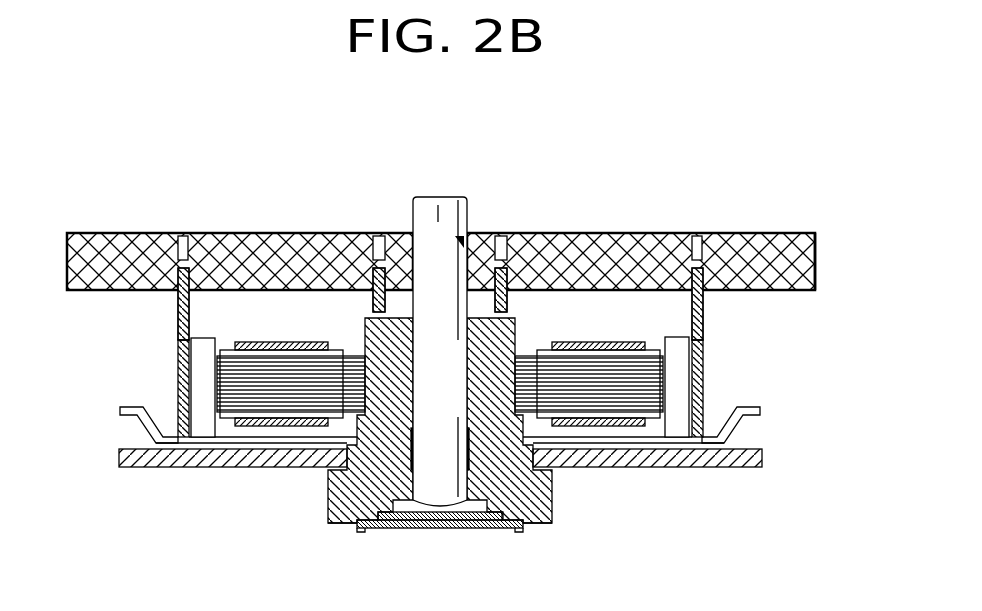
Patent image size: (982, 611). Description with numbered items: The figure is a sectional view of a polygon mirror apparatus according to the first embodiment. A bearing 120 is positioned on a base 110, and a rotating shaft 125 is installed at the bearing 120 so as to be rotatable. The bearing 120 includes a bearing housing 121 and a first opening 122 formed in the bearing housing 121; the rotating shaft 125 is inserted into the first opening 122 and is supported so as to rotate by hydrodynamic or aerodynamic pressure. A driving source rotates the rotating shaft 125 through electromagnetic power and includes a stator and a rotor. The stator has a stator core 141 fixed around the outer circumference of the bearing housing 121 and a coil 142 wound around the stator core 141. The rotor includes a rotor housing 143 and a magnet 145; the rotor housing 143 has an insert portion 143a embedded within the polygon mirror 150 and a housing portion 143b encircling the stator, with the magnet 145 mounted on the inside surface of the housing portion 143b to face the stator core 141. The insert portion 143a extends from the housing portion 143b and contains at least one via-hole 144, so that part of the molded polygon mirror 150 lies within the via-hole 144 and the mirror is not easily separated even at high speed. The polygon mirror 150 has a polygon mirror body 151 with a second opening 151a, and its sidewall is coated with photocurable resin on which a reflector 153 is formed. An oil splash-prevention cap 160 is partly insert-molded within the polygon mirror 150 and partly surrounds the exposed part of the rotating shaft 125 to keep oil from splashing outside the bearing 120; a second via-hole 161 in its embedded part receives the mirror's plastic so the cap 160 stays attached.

The base 110 is at (723, 463).
The bearing 120 is at (575, 529).
The bearing housing 121 is at (375, 437).
The first opening 122 is at (358, 528).
The rotating shaft 125 is at (440, 197).
The stator core 141 is at (597, 400).
The coil 142 is at (585, 344).
The rotor housing 143 is at (78, 313).
The insert portion 143a is at (176, 292).
The housing portion 143b is at (182, 376).
The via-hole 144 is at (178, 255).
The magnet 145 is at (680, 425).
The polygon mirror 150 is at (824, 234).
The polygon mirror body 151 is at (773, 243).
The second opening 151a is at (468, 236).
The reflector 153 is at (815, 275).
The oil splash-prevention cap 160 is at (358, 297).
The second via-hole 161 is at (373, 257).